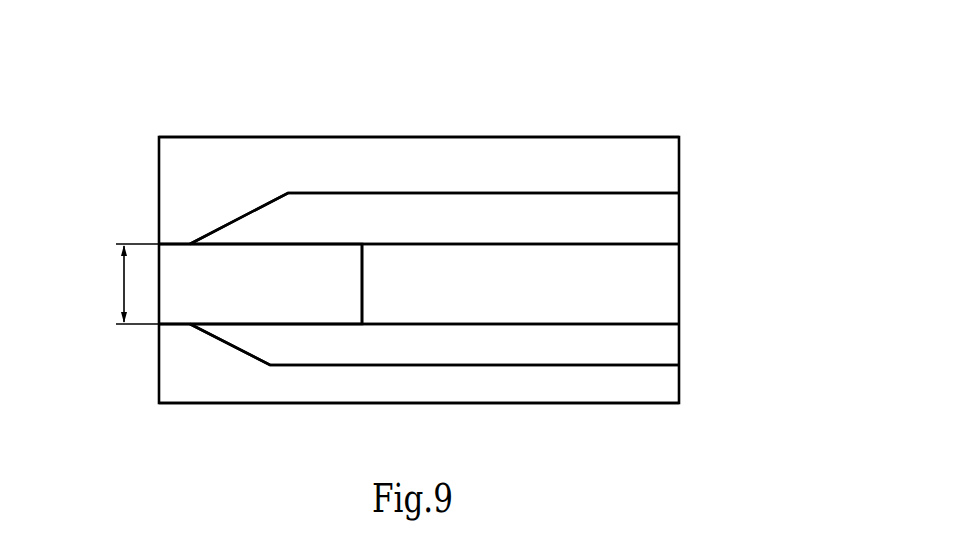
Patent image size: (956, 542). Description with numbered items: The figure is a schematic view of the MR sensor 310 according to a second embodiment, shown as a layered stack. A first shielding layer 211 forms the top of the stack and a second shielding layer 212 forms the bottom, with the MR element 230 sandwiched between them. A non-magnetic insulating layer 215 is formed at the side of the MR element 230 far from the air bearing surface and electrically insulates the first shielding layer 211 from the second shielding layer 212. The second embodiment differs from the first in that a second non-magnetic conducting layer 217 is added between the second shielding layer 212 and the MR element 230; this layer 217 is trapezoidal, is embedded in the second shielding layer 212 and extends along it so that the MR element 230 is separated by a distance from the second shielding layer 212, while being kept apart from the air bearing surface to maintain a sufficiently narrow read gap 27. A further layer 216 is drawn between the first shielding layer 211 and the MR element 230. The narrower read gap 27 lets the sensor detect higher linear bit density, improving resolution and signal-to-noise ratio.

The MR sensor 310 is at (82, 46).
The first shielding layer 211 is at (656, 177).
The upper cladding layer 216 is at (656, 233).
The non-magnetic insulating layer 215 is at (656, 299).
The MR element 230 is at (195, 270).
The second non-magnetic conducting layer 217 is at (656, 350).
The second shielding layer 212 is at (656, 388).
The read gap 27 is at (119, 284).